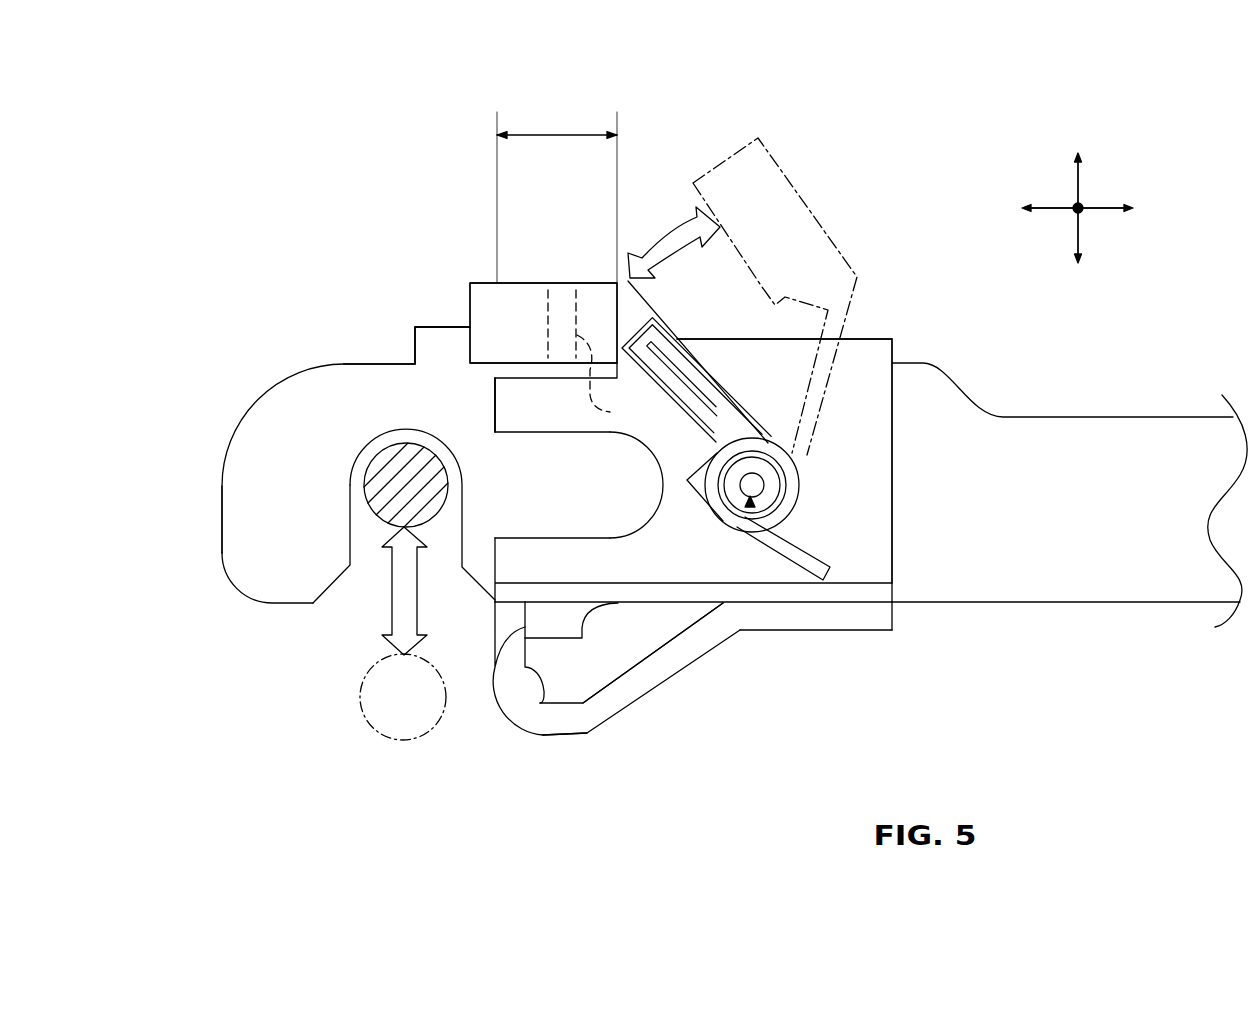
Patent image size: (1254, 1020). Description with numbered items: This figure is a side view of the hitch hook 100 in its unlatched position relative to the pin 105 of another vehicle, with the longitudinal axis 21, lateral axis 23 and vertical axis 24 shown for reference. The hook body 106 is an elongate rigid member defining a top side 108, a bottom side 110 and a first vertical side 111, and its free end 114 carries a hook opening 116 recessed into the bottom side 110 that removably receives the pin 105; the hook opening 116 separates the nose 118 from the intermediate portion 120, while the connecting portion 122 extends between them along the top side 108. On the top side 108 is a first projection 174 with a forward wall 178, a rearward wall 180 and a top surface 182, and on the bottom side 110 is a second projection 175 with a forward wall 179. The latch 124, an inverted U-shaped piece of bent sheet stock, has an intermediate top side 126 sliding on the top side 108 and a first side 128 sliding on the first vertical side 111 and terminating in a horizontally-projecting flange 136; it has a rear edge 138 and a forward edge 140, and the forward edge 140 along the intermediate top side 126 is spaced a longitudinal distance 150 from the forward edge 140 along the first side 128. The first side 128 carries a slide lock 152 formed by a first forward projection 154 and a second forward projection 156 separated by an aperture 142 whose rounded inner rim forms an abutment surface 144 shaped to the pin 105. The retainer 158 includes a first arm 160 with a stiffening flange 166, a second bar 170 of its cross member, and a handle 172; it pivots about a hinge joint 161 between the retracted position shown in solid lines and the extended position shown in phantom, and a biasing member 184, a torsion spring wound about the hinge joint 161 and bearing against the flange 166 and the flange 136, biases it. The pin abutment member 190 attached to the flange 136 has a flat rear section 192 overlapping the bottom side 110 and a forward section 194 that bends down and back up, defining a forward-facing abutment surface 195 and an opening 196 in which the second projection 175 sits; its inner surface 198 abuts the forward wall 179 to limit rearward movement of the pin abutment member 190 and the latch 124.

The hitch hook 100 is at (372, 100).
The pin 105 is at (387, 499).
The hook body 106 is at (235, 410).
The top side 108 is at (933, 363).
The bottom side 110 is at (993, 602).
The first vertical side 111 is at (1075, 526).
The free end 114 is at (222, 505).
The hook opening 116 is at (362, 578).
The nose 118 is at (267, 547).
The intermediate portion 120 is at (485, 508).
The connecting portion 122 is at (383, 380).
The latch 124 is at (866, 360).
The intermediate top side 126 is at (740, 335).
The first side 128 is at (827, 501).
The flange 136 is at (843, 603).
The rear edge 138 is at (892, 442).
The forward edge 140 is at (495, 395).
The aperture 142 is at (612, 459).
The abutment surface 144 is at (517, 537).
The longitudinal distance 150 is at (555, 133).
The slide lock 152 is at (469, 416).
The first forward projection 154 is at (520, 419).
The second forward projection 156 is at (522, 572).
The retainer 158 is at (522, 264).
The first arm 160 is at (635, 313).
The hinge joint 161 is at (750, 497).
The flange 166 is at (680, 393).
The second bar 170 is at (611, 380).
The handle 172 is at (477, 262).
The first projection 174 is at (425, 340).
The second projection 175 is at (560, 620).
The forward wall 178 is at (413, 335).
The forward wall 179 is at (486, 632).
The rearward wall 180 is at (472, 349).
The top surface 182 is at (450, 327).
The biasing member 184 is at (787, 513).
The pin abutment member 190 is at (641, 730).
The rear section 192 is at (795, 622).
The forward section 194 is at (565, 734).
The forward-facing abutment surface 195 is at (488, 632).
The opening 196 is at (610, 644).
The inner surface 198 is at (538, 702).
The longitudinal axis 21 is at (1105, 207).
The lateral axis 23 is at (1080, 205).
The vertical axis 24 is at (1077, 190).